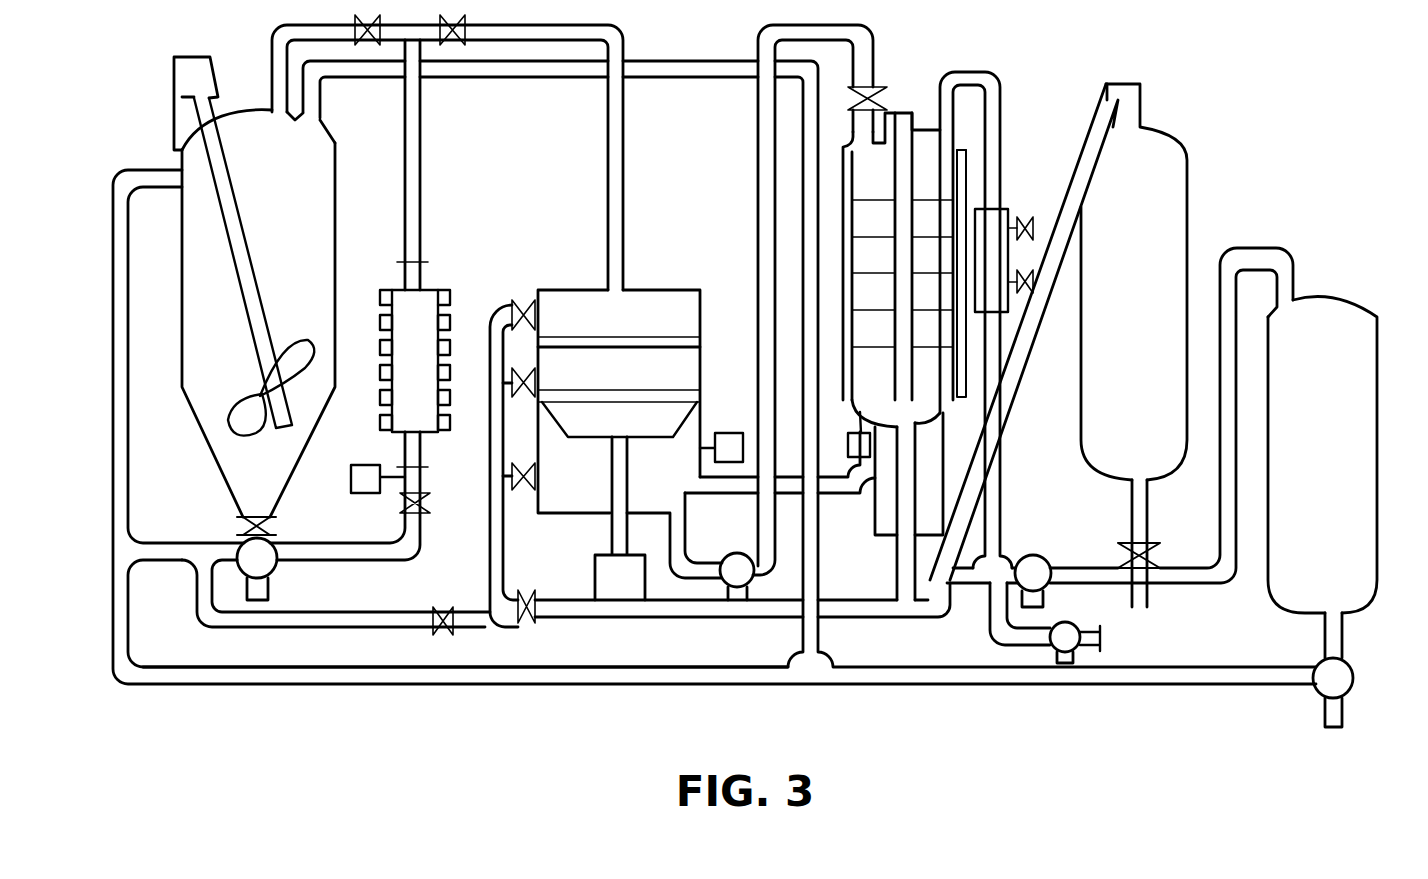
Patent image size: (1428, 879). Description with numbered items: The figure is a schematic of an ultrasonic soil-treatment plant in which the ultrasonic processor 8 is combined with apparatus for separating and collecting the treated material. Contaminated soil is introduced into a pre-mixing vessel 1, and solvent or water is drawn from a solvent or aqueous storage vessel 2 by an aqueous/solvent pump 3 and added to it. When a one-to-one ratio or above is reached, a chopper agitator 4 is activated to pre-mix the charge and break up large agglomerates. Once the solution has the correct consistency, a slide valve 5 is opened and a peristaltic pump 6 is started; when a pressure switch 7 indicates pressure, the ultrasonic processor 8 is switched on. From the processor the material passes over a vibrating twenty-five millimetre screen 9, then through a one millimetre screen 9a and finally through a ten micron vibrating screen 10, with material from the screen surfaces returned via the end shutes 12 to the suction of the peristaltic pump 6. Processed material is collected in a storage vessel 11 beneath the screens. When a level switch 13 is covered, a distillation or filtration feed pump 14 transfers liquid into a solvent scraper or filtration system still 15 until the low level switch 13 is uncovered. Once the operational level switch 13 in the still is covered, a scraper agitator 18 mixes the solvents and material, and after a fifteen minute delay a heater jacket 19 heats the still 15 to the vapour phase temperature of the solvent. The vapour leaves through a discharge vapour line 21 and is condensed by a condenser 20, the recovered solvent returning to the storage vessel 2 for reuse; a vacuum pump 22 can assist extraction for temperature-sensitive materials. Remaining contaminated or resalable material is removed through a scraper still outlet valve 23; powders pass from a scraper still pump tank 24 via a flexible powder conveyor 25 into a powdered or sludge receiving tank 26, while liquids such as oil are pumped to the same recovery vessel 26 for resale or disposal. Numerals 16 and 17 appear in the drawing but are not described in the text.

The pre-mixing vessel 1 is at (338, 205).
The solvent or aqueous storage vessel 2 is at (1378, 428).
The aqueous/solvent pump 3 is at (1355, 678).
The chopper agitator 4 is at (257, 282).
The slide valve 5 is at (276, 514).
The peristaltic pump 6 is at (266, 566).
The pressure switch 7 is at (352, 481).
The ultrasonic processor 8 is at (447, 301).
The vibrating 25 mm screen 9 is at (701, 318).
The 1 mm screen 9a is at (701, 372).
The 10 micron vibrating screen 10 is at (667, 422).
The storage vessel 11 is at (591, 515).
The end shutes 12 is at (491, 463).
The level switch 13 is at (728, 462).
The distillation or filtration feed pump 14 is at (746, 580).
The solvent scraper or filtration system still 15 is at (922, 152).
The sensor 16 is at (858, 458).
The outlet 17 is at (1097, 648).
The scraper agitator 18 is at (903, 192).
The heater jacket 19 is at (962, 160).
The condenser 20 is at (1008, 255).
The discharge vapour line 21 is at (968, 78).
The vacuum pump 22 is at (1064, 630).
The scraper still outlet valve 23 is at (1130, 542).
The scraper still pump tank 24 is at (911, 599).
The flexible powder conveyor 25 is at (1006, 410).
The powdered or sludge receiving tank 26 is at (1170, 227).